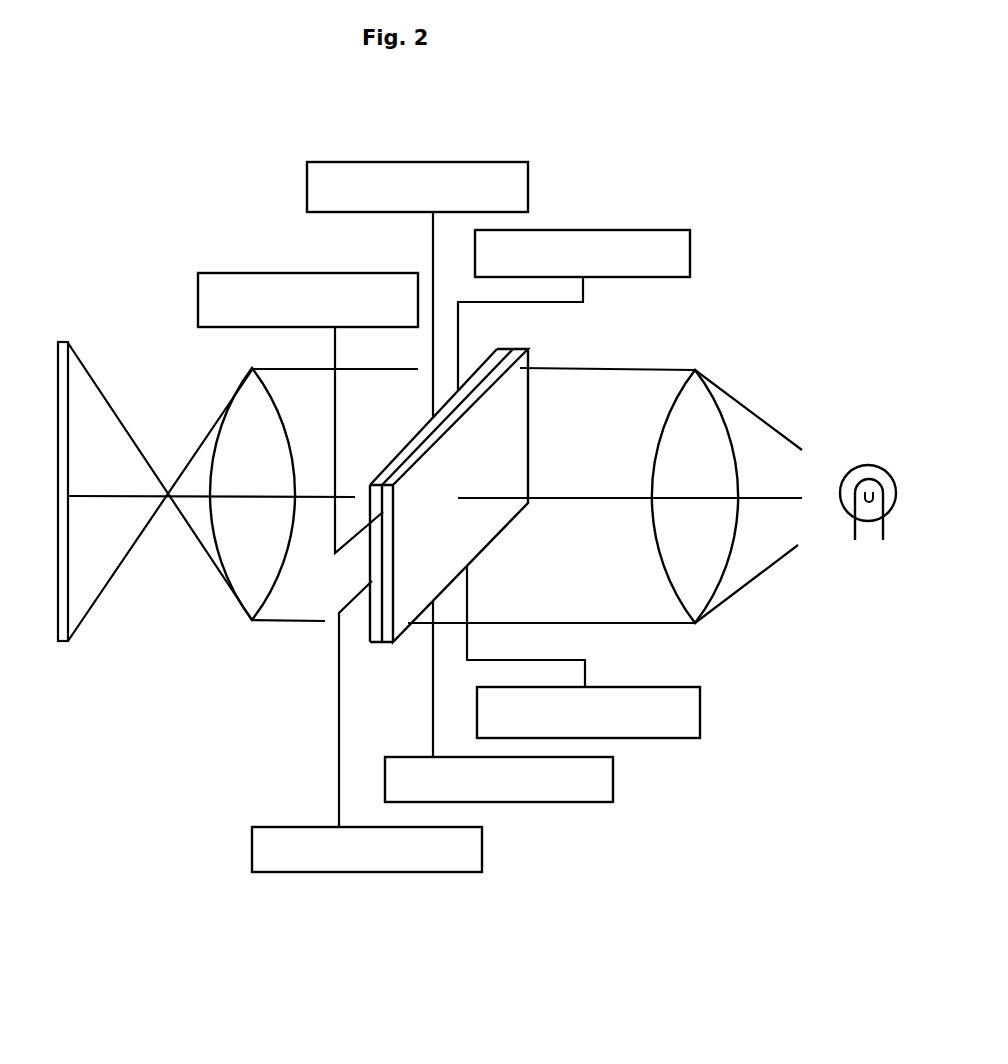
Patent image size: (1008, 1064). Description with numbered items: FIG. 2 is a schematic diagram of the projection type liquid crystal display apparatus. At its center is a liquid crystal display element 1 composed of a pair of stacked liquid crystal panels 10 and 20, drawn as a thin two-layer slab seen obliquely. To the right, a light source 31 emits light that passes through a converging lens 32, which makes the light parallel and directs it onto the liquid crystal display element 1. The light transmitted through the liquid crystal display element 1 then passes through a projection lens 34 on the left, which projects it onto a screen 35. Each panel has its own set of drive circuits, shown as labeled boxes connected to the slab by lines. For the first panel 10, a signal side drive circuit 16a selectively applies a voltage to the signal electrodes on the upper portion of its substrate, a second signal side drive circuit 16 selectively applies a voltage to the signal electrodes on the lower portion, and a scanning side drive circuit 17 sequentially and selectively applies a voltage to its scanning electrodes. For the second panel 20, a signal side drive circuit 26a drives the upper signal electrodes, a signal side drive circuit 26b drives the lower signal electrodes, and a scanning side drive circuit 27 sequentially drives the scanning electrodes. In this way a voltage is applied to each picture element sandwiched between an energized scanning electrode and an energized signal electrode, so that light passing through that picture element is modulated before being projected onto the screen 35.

The liquid crystal display element 1 is at (503, 516).
The liquid crystal panel 10 is at (532, 360).
The liquid crystal panel 20 is at (492, 349).
The signal side drive circuit 16 is at (700, 722).
The signal side drive circuit 16a is at (670, 230).
The scanning side drive circuit 17 is at (276, 273).
The signal side drive circuit 26a is at (613, 788).
The signal side drive circuit 26b is at (510, 162).
The scanning side drive circuit 27 is at (385, 872).
The light source 31 is at (875, 465).
The converging lens 32 is at (693, 393).
The projection lens 34 is at (240, 600).
The screen 35 is at (63, 342).